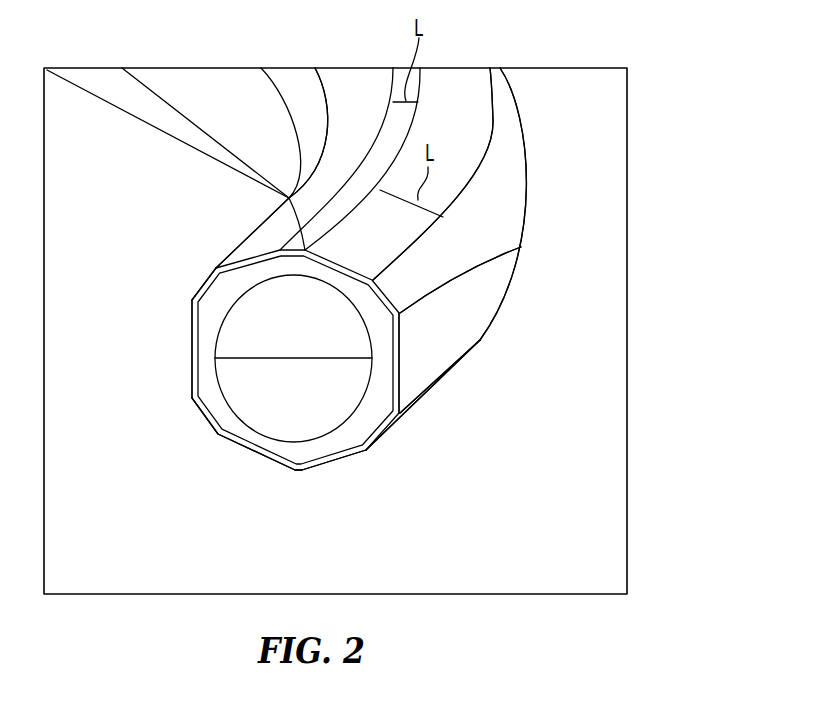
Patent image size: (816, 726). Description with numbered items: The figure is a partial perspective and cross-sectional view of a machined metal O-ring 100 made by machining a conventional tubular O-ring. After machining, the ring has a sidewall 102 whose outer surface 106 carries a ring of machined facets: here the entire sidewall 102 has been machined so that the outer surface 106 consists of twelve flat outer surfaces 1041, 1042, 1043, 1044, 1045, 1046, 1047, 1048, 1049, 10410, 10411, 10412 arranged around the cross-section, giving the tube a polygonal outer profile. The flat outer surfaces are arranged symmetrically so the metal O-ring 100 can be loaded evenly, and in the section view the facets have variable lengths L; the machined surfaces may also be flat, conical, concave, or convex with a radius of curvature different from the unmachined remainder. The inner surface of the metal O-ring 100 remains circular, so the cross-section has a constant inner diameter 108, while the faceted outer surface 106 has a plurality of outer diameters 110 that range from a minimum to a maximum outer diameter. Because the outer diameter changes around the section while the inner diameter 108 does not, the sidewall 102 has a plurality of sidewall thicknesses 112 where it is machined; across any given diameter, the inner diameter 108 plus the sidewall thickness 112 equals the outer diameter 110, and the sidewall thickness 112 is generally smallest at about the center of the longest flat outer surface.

The metal O-ring 100 is at (517, 143).
The sidewall 102 is at (367, 427).
The outer surface 106 is at (505, 283).
The inner diameter 108 is at (300, 357).
The outer diameters 110 is at (263, 400).
The sidewall thicknesses 112 is at (400, 322).
The flat outer surface 1041 is at (280, 207).
The flat outer surface 1042 is at (447, 112).
The flat outer surface 1043 is at (493, 199).
The flat outer surface 1044 is at (453, 350).
The flat outer surface 1045 is at (438, 390).
The flat outer surface 1046 is at (350, 460).
The flat outer surface 1047 is at (296, 472).
The flat outer surface 1048 is at (338, 265).
The flat outer surface 1049 is at (217, 435).
The flat outer surface 10410 is at (192, 362).
The flat outer surface 10411 is at (203, 287).
The flat outer surface 10412 is at (353, 87).